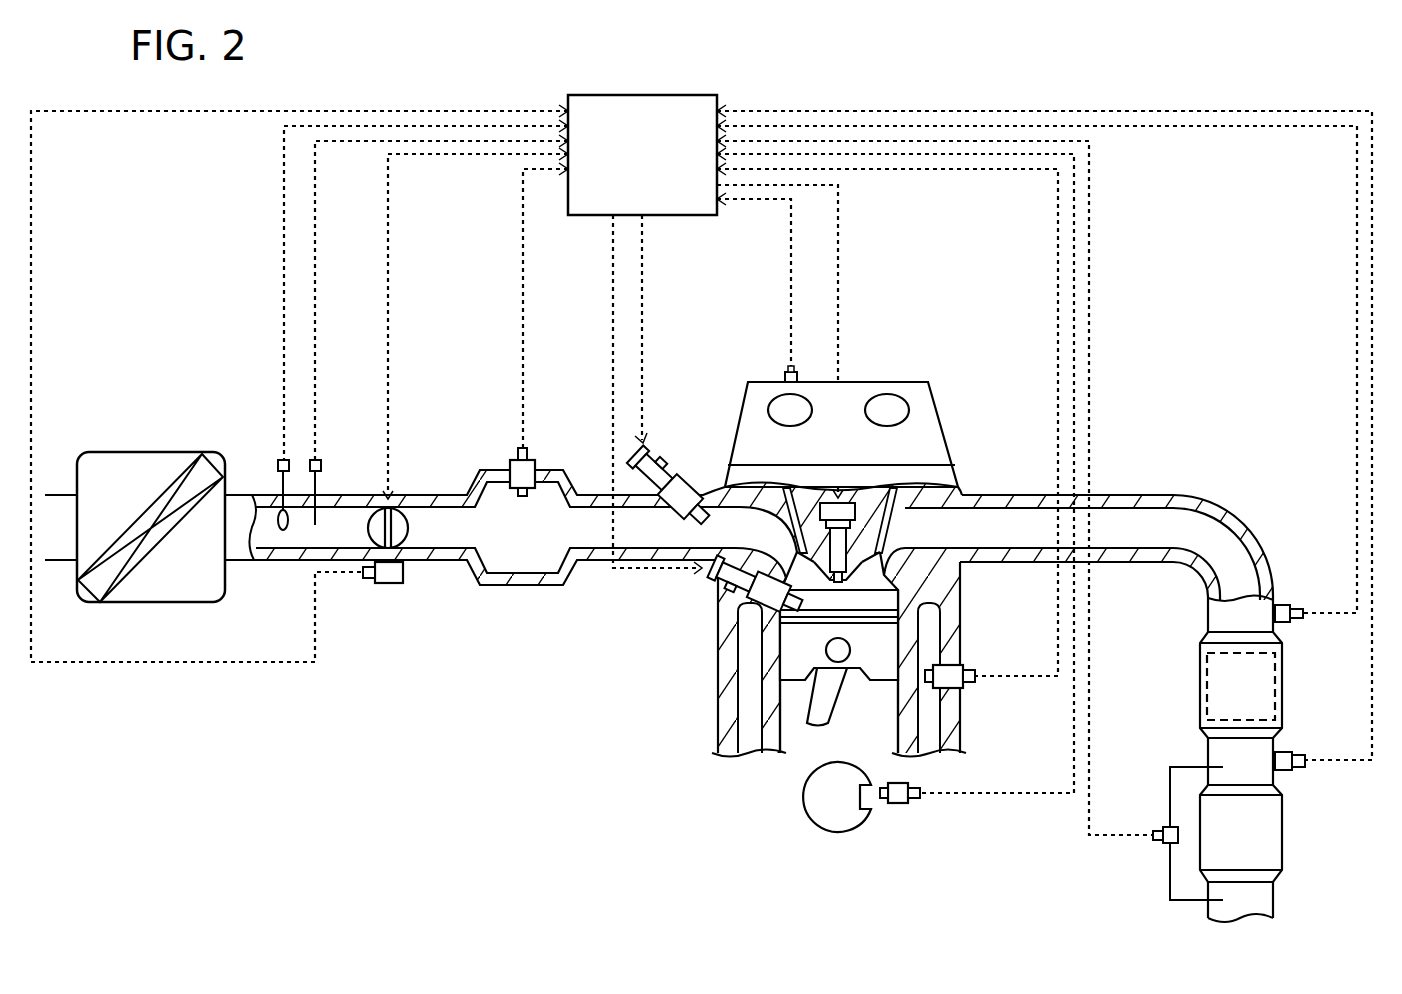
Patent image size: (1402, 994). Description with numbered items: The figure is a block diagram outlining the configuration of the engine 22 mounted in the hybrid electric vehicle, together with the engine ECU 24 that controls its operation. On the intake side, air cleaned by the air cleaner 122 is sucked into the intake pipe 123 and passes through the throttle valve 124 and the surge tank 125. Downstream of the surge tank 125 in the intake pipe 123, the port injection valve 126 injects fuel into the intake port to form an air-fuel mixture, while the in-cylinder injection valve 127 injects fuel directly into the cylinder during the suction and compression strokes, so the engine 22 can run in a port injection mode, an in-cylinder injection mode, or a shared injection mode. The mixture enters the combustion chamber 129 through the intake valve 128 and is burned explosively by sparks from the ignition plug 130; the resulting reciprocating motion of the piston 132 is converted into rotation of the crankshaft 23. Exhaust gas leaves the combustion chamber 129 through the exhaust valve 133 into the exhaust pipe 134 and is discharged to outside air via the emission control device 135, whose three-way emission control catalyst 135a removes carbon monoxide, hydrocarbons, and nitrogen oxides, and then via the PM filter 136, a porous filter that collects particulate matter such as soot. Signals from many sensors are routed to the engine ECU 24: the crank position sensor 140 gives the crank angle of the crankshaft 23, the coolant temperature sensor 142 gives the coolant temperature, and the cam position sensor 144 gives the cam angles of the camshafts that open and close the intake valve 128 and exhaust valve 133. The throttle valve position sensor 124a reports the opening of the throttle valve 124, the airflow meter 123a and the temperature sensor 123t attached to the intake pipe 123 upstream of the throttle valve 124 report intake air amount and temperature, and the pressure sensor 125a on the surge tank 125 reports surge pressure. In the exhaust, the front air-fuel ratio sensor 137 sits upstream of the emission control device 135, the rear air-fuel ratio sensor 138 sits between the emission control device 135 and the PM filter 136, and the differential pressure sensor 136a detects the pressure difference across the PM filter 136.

The engine 22 is at (931, 350).
The crankshaft 23 is at (838, 834).
The engine ECU 24 is at (640, 95).
The air cleaner 122 is at (195, 452).
The intake pipe 123 is at (285, 562).
The airflow meter 123a is at (278, 462).
The temperature sensor 123t is at (321, 462).
The throttle valve 124 is at (403, 524).
The throttle valve position sensor 124a is at (391, 585).
The surge tank 125 is at (550, 470).
The pressure sensor 125a is at (515, 456).
The port injection valve 126 is at (680, 470).
The in-cylinder injection valve 127 is at (748, 580).
The intake valve 128 is at (792, 552).
The combustion chamber 129 is at (900, 592).
The ignition plug 130 is at (840, 543).
The piston 132 is at (790, 655).
The exhaust valve 133 is at (872, 586).
The exhaust pipe 134 is at (1000, 494).
The emission control device 135 is at (1200, 702).
The emission control catalyst 135a is at (1210, 669).
The PM filter 136 is at (1283, 832).
The differential pressure sensor 136a is at (1163, 830).
The front air-fuel ratio sensor 137 is at (1294, 606).
The rear air-fuel ratio sensor 138 is at (1294, 752).
The crank position sensor 140 is at (898, 805).
The coolant temperature sensor 142 is at (962, 690).
The cam position sensor 144 is at (788, 372).